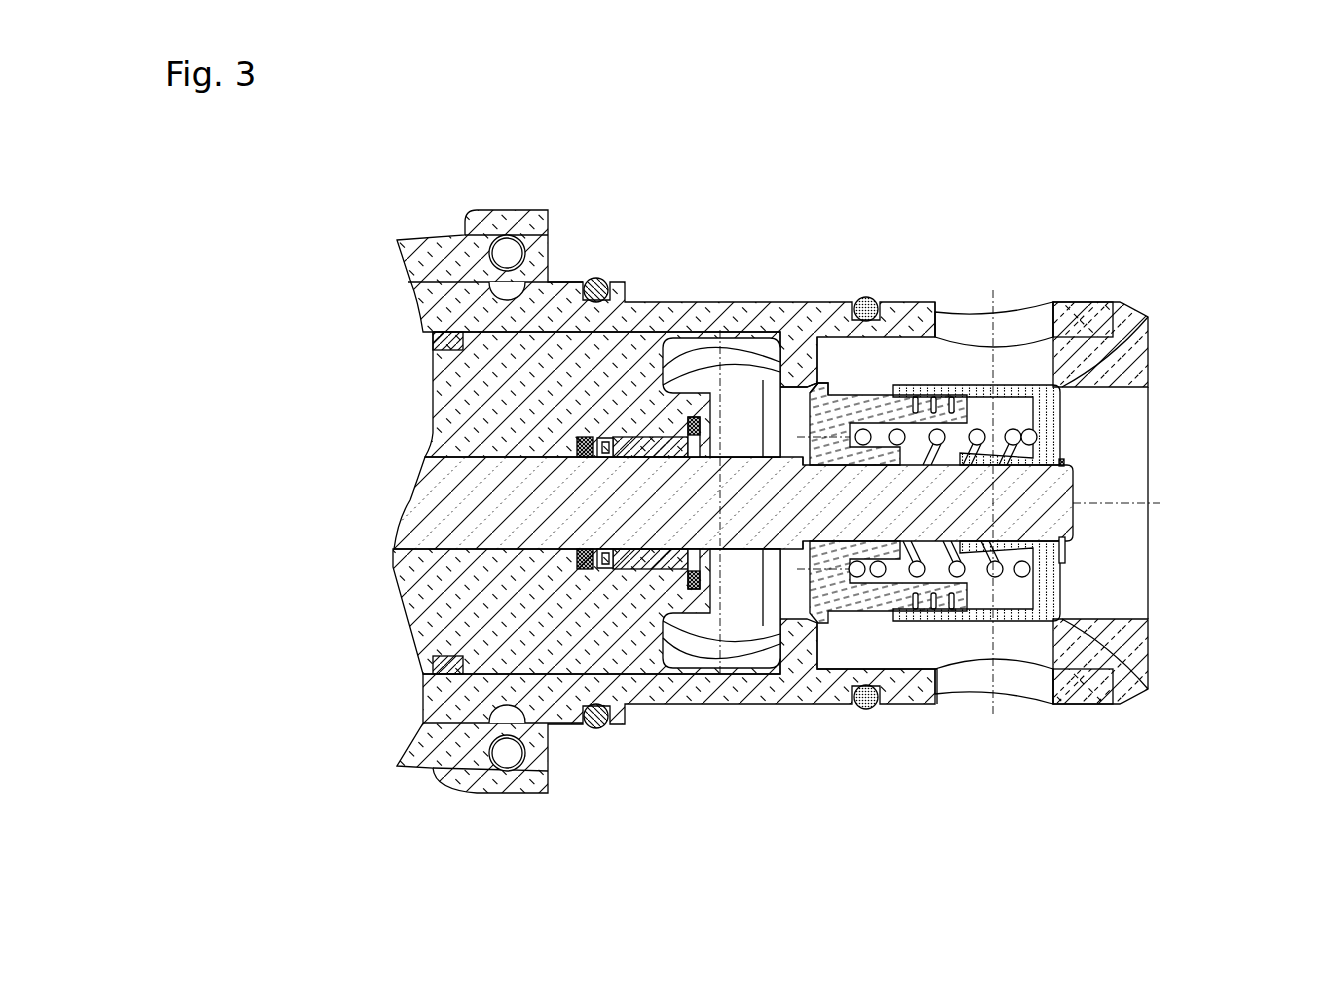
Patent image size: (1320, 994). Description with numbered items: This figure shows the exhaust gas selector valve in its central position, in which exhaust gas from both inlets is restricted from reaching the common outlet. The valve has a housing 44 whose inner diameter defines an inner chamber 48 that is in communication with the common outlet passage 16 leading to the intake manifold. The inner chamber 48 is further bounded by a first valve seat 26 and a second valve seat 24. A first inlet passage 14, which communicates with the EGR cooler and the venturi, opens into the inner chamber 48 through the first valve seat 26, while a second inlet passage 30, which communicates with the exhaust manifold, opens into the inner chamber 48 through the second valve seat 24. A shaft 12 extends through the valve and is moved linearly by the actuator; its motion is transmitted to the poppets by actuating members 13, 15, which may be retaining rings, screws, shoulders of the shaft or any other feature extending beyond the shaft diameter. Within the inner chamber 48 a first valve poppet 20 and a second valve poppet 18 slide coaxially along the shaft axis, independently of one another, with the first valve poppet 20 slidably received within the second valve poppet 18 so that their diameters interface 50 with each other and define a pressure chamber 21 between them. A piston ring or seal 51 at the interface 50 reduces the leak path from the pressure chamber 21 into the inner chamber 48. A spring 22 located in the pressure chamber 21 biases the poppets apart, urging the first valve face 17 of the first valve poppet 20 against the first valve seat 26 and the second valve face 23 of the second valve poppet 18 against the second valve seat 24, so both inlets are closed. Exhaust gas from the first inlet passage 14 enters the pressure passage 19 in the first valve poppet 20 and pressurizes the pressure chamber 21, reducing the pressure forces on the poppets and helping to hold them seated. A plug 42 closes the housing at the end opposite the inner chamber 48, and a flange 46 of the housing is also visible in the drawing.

The shaft 12 is at (1045, 497).
The actuating member 13 is at (1067, 556).
The first inlet passage 14 is at (703, 663).
The actuating member 15 is at (807, 380).
The common outlet passage 16 is at (1040, 317).
The first valve face 17 is at (798, 453).
The second valve poppet 18 is at (1010, 623).
The pressure passage 19 is at (823, 578).
The first valve poppet 20 is at (853, 393).
The pressure chamber 21 is at (918, 578).
The spring 22 is at (877, 573).
The second valve face 23 is at (1148, 330).
The second valve seat 24 is at (1057, 613).
The first valve seat 26 is at (813, 387).
The second inlet passage 30 is at (1118, 418).
The plug 42 is at (545, 382).
The housing 44 is at (1095, 304).
The flange 46 is at (633, 710).
The inner chamber 48 is at (913, 657).
The interface 50 is at (940, 397).
The piston ring or seal 51 is at (953, 397).